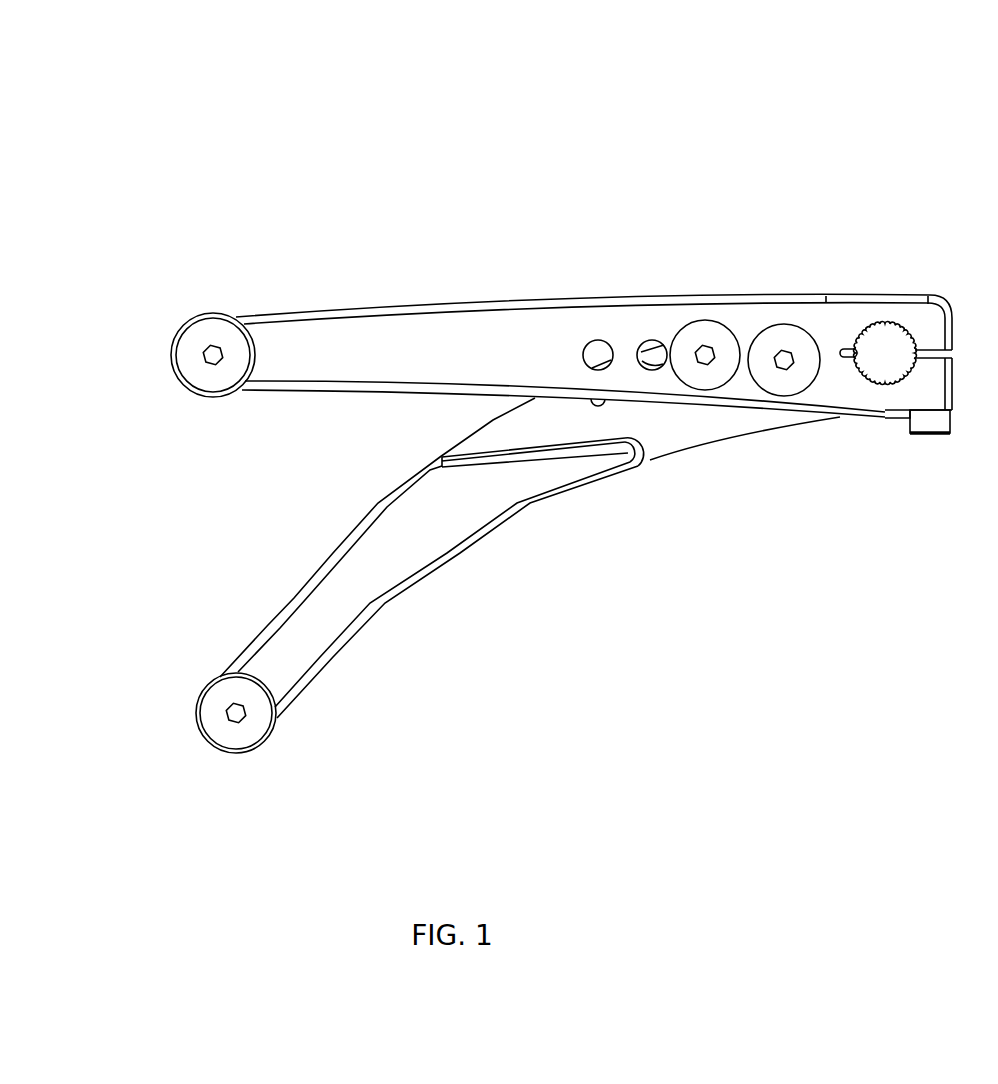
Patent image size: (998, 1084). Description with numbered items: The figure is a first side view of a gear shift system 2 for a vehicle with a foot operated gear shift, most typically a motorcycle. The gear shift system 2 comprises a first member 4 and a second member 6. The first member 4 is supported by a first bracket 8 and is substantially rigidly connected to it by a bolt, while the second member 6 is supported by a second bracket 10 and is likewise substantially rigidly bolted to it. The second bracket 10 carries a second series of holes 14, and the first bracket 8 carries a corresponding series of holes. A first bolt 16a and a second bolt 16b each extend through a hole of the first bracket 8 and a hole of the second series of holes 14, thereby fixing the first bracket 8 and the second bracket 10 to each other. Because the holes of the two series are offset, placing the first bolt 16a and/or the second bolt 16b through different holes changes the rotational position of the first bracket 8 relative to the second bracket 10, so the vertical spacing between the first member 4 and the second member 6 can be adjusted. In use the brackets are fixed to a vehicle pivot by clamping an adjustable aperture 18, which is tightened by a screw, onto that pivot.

The gear shift system 2 is at (325, 245).
The first member 4 is at (210, 752).
The second member 6 is at (178, 323).
The first bracket 8 is at (367, 582).
The second bracket 10 is at (533, 338).
The second series of holes 14 is at (650, 340).
The first bolt 16a is at (713, 330).
The second bolt 16b is at (793, 338).
The adjustable aperture 18 is at (890, 337).